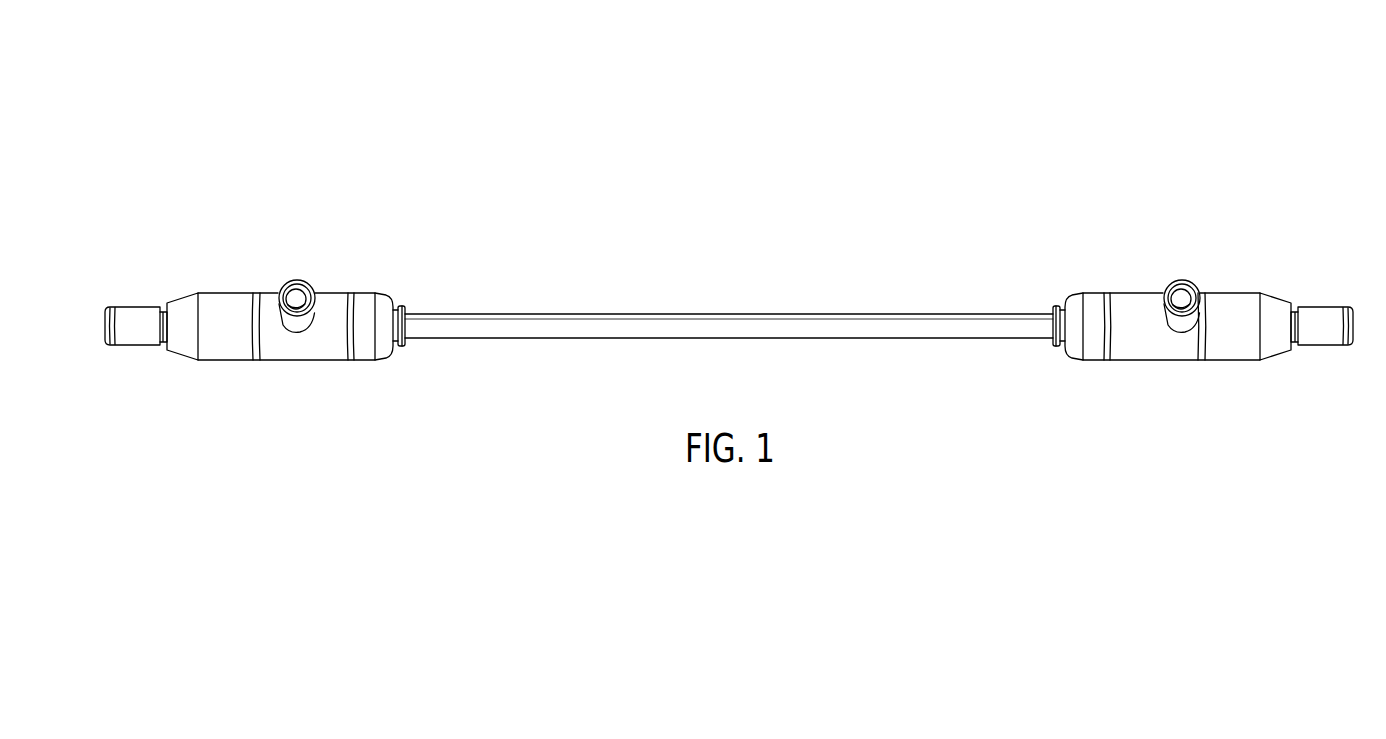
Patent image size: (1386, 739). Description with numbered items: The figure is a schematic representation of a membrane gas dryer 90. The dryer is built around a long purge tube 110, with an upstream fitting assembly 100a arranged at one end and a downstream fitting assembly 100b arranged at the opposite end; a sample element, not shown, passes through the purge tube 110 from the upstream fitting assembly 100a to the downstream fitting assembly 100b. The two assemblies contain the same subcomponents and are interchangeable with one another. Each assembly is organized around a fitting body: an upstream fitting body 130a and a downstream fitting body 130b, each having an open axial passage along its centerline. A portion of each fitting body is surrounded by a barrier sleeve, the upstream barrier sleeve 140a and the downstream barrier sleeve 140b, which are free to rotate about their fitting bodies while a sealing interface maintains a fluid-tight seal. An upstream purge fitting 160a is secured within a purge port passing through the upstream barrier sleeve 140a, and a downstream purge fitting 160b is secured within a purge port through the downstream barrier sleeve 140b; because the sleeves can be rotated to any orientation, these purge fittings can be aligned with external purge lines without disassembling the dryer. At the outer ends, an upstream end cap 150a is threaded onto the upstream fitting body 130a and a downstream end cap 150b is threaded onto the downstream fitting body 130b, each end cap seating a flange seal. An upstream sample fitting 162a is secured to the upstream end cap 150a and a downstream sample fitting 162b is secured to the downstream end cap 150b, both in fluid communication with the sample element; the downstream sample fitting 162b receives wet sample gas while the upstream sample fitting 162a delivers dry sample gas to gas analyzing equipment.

The membrane gas dryer 90 is at (898, 118).
The purge tube 110 is at (641, 298).
The upstream fitting assembly 100a is at (205, 251).
The downstream fitting assembly 100b is at (1261, 237).
The upstream fitting body 130a is at (389, 374).
The downstream fitting body 130b is at (1072, 377).
The upstream barrier sleeve 140a is at (308, 372).
The downstream barrier sleeve 140b is at (1154, 378).
The upstream end cap 150a is at (212, 374).
The downstream end cap 150b is at (1250, 378).
The upstream purge fitting 160a is at (295, 280).
The downstream purge fitting 160b is at (1181, 280).
The upstream sample fitting 162a is at (132, 346).
The downstream sample fitting 162b is at (1330, 346).